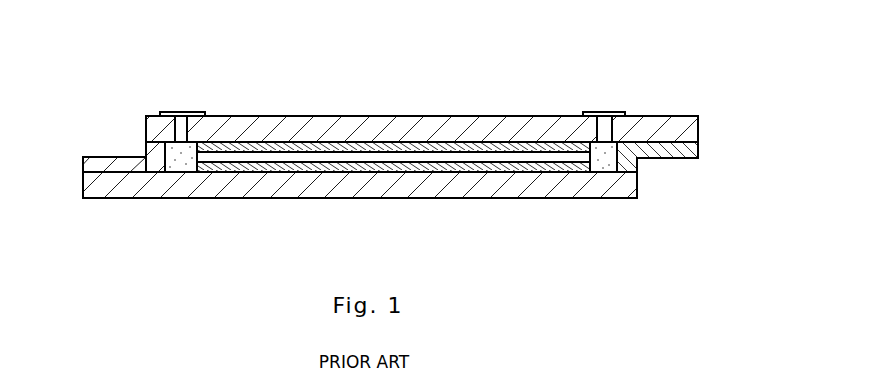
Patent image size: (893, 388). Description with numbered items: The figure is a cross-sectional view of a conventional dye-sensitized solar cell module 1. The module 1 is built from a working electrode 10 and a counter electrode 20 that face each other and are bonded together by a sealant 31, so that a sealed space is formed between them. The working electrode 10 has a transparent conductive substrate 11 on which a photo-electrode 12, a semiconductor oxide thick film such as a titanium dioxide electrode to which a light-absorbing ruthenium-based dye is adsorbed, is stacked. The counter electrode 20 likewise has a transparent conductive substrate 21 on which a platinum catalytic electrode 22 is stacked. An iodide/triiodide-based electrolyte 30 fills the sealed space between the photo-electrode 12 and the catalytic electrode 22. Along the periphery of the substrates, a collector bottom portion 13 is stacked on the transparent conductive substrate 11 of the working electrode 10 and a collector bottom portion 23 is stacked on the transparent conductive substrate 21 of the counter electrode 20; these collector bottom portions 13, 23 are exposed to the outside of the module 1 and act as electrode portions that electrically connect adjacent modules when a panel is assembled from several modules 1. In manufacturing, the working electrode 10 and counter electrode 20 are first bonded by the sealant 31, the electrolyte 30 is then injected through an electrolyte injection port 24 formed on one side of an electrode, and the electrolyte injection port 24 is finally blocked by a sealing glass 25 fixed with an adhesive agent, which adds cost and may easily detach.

The dye-sensitized solar cell module 1 is at (655, 82).
The working electrode 10 is at (190, 207).
The transparent conductive substrate 11 is at (437, 182).
The photo-electrode 12 is at (383, 166).
The collector bottom portion 13 is at (88, 165).
The counter electrode 20 is at (712, 113).
The transparent conductive substrate 21 is at (417, 128).
The catalytic electrode 22 is at (356, 148).
The collector bottom portion 23 is at (666, 158).
The electrolyte injection port 24 is at (181, 128).
The sealing glass 25 is at (200, 115).
The electrolyte 30 is at (333, 157).
The sealant 31 is at (146, 150).